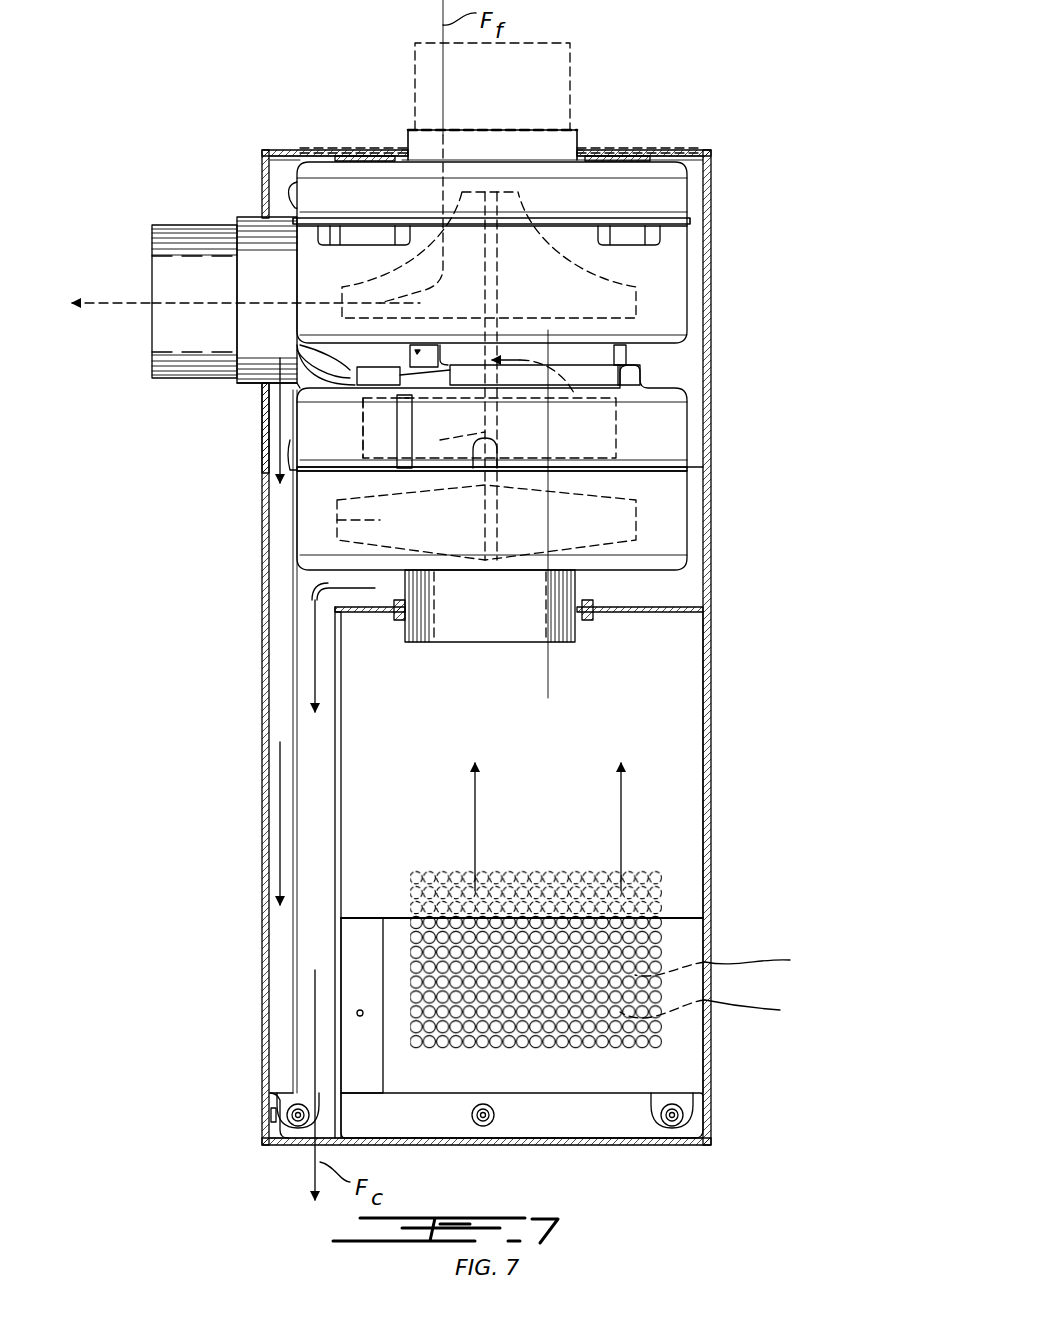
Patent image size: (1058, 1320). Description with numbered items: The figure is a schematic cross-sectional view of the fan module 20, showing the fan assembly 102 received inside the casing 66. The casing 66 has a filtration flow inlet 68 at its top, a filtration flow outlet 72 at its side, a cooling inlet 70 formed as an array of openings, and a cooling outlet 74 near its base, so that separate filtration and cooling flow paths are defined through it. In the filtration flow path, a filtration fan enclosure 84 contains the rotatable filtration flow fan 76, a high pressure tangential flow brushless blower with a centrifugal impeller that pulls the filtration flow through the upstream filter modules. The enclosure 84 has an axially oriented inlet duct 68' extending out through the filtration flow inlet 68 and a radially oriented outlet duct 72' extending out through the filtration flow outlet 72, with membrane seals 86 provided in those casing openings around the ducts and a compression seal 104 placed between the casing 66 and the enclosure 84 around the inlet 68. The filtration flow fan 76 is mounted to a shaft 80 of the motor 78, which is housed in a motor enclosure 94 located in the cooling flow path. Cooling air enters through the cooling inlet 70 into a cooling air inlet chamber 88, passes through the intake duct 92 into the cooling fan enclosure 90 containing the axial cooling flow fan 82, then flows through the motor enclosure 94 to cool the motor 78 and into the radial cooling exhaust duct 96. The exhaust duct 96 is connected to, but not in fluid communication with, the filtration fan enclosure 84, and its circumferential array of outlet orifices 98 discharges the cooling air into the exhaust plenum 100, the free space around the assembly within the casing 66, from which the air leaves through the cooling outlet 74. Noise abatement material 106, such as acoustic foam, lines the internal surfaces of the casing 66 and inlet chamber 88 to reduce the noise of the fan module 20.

The fan module 20 is at (728, 135).
The casing 66 is at (705, 392).
The filtration flow inlet 68 is at (486, 117).
The filtration flow inlet duct 68' is at (519, 73).
The cooling inlet 70 is at (652, 940).
The filtration flow outlet 72 is at (286, 281).
The filtration flow outlet duct 72' is at (109, 330).
The cooling outlet 74 is at (302, 1150).
The filtration flow fan 76 is at (380, 275).
The motor 78 is at (378, 427).
The shaft 80 is at (470, 432).
The cooling flow fan 82 is at (373, 525).
The filtration fan enclosure 84 is at (322, 265).
The membrane seal 86 is at (395, 148).
The cooling air inlet chamber 88 is at (652, 714).
The cooling fan enclosure 90 is at (665, 512).
The intake duct 92 is at (450, 643).
The motor enclosure 94 is at (665, 437).
The radial cooling exhaust duct 96 is at (630, 352).
The outlet orifices 98 is at (340, 356).
The exhaust plenum 100 is at (695, 266).
The fan assembly 102 is at (693, 480).
The compression seal 104 is at (630, 160).
The noise abatement material 106 is at (264, 772).